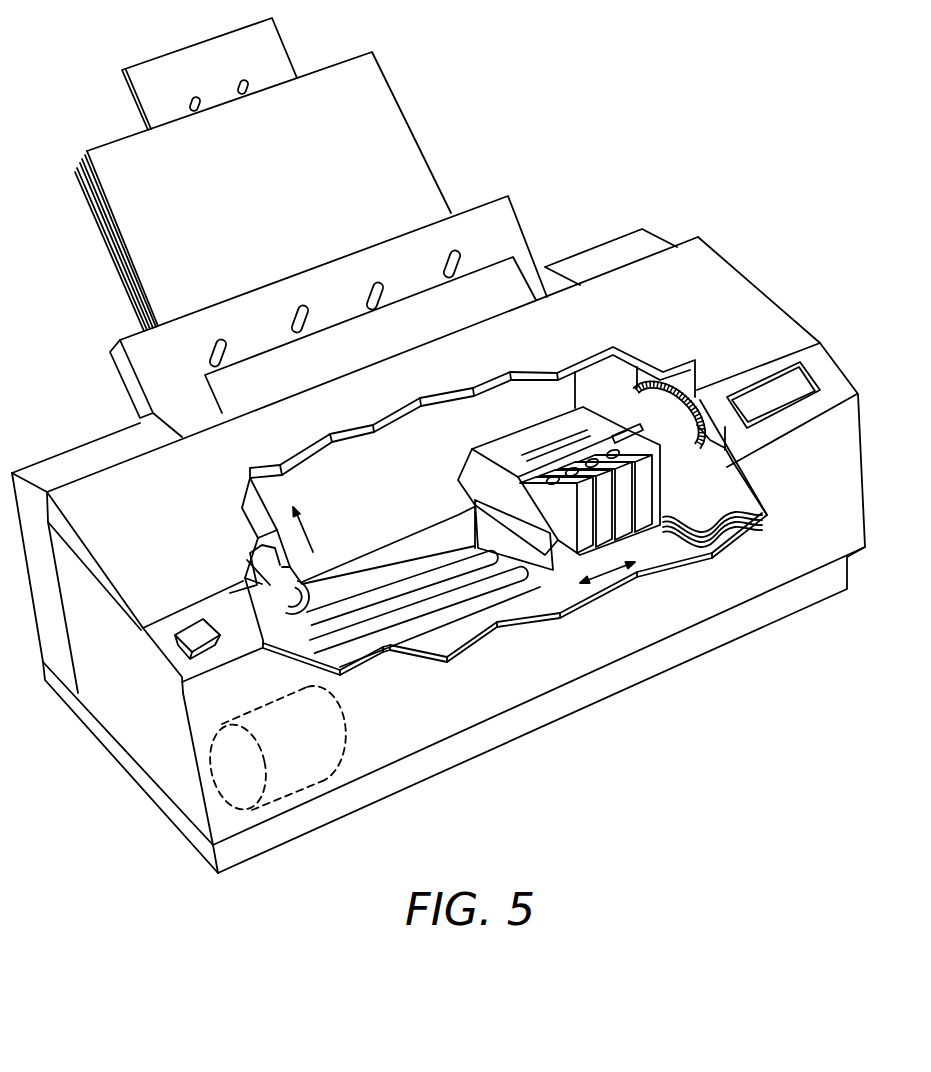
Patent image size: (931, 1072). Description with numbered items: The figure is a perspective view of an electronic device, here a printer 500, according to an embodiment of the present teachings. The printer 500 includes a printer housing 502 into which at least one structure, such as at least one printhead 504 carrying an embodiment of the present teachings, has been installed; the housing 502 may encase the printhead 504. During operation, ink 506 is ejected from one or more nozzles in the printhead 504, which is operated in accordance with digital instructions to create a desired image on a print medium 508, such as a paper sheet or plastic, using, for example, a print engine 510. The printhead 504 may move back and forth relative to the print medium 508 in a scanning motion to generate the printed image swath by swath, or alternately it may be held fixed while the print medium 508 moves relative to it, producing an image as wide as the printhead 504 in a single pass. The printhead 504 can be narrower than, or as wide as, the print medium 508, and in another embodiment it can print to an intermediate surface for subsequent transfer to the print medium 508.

The printer 500 is at (789, 290).
The printer housing 502 is at (705, 255).
The printhead 504 is at (577, 440).
The ink 506 is at (414, 491).
The print medium 508 is at (522, 282).
The print engine 510 is at (230, 773).